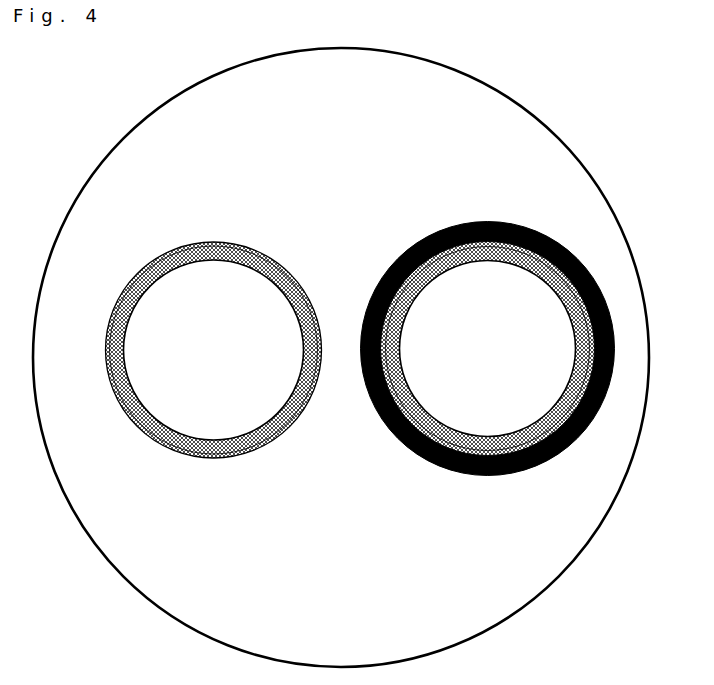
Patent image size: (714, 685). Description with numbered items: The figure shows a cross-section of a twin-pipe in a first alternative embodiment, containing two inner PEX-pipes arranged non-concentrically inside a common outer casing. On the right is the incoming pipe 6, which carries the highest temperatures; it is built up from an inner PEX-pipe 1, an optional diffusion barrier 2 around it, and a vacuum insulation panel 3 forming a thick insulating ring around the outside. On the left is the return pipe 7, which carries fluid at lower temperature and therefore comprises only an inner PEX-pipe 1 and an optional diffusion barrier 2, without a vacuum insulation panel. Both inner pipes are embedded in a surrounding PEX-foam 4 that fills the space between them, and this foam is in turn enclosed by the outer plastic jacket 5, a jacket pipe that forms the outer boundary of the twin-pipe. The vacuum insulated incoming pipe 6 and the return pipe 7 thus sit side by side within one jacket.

The inner PEX-pipe 1 is at (585, 263).
The optional diffusion barrier 2 is at (405, 373).
The vacuum insulation panel (VIP) 3 is at (601, 299).
The PEX-foam 4 is at (618, 315).
The outer plastic jacket 5 is at (651, 336).
The incoming pipe (highest temperature) 6 is at (342, 287).
The return pipe (lower temperature) 7 is at (215, 332).